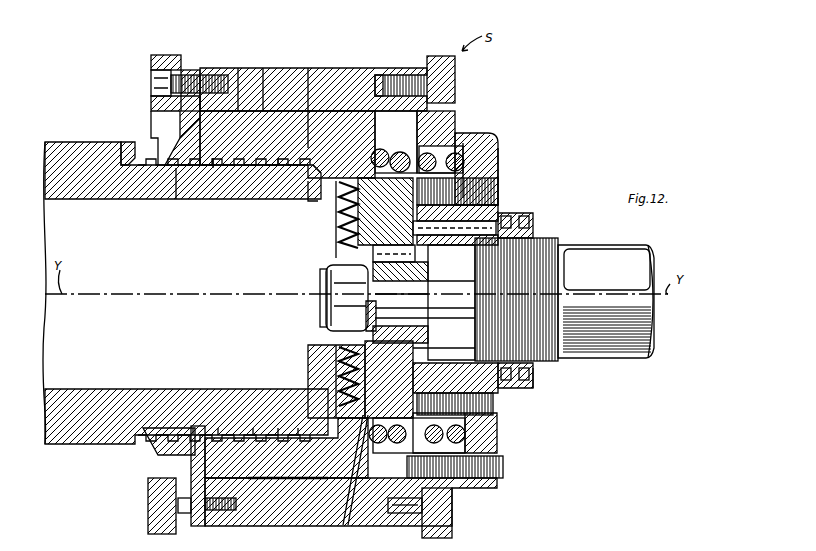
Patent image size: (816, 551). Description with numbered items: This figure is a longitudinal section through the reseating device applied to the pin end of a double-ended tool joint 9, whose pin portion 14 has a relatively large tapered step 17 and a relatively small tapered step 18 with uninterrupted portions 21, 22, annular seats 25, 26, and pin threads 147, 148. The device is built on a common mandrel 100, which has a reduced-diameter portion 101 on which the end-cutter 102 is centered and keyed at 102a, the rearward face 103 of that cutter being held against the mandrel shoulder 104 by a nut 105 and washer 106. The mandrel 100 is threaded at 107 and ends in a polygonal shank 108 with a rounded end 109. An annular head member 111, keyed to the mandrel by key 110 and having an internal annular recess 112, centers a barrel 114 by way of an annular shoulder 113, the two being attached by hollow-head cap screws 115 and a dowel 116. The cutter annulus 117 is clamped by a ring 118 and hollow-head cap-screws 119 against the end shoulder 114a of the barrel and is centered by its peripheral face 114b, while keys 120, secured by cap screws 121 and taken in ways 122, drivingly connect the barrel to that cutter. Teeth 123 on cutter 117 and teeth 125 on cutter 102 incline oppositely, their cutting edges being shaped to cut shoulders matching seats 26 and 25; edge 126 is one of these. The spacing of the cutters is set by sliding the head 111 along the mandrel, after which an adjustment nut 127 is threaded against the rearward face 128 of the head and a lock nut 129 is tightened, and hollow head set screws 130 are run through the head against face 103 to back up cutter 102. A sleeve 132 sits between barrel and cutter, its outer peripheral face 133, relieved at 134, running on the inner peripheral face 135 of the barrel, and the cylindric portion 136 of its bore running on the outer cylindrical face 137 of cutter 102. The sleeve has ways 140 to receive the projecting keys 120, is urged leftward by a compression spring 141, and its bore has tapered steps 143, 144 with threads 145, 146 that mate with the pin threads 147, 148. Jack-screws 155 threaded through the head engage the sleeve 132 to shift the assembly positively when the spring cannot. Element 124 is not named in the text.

The double-ended tool joint 9 is at (62, 129).
The pin portion 14 is at (168, 191).
The relatively large tapered step 17 is at (135, 191).
The relatively small tapered step 18 is at (270, 191).
The uninterrupted portion of large pin step 21 is at (112, 191).
The uninterrupted portion of small pin step 22 is at (309, 191).
The annular shoulder or seat 25 is at (322, 175).
The annular shoulder or seat 26 is at (120, 138).
The mandrel 100 is at (446, 300).
The reduced-diameter portion 101 is at (350, 295).
The end-cutter 102 is at (435, 140).
The key 102a is at (365, 246).
The rearward face of cutter 103 is at (490, 185).
The mandrel shoulder 104 is at (407, 286).
The nut 105 is at (334, 300).
The washer 106 is at (358, 318).
The mandrel threads 107 is at (537, 353).
The polygonal shank 108 is at (615, 335).
The rounded end 109 is at (652, 270).
The key 110 is at (490, 200).
The annular head member 111 is at (485, 143).
The internal annular recess 112 is at (429, 148).
The annular shoulder 113 is at (445, 110).
The barrel 114 is at (330, 70).
The end shoulder of barrel 114a is at (262, 62).
The peripheral face of barrel 114b is at (182, 90).
The hollow-head cap screws 115 is at (394, 77).
The dowel 116 is at (410, 497).
The cutter annulus 117 is at (238, 80).
The ring 118 is at (155, 47).
The hollow-head cap-screws 119 is at (153, 70).
The keys 120 is at (185, 470).
The cap screws 121 is at (210, 505).
The ways 122 is at (187, 460).
The teeth 123 is at (143, 152).
The housing flange 124 is at (330, 340).
The teeth 125 is at (147, 147).
The cutting edge 126 is at (290, 380).
The adjustment nut 127 is at (497, 380).
The rearward face of head 128 is at (490, 148).
The lock nut 129 is at (522, 380).
The hollow head set screws 130 is at (490, 175).
The sleeve or ring 132 is at (297, 117).
The outer peripheral face of sleeve 133 is at (305, 97).
The central relief 134 is at (312, 66).
The inner peripheral face of barrel 135 is at (233, 470).
The cylindric portion of sleeve inner face 136 is at (340, 517).
The outer cylindrical face of cutter 137 is at (335, 517).
The ways 140 is at (185, 420).
The compression spring 141 is at (479, 133).
The tapered step 143 is at (245, 420).
The tapered step 144 is at (210, 420).
The threads 145 is at (270, 420).
The threads 146 is at (205, 191).
The pin threads 147 is at (290, 420).
The pin threads 148 is at (205, 191).
The jack-screws 155 is at (495, 462).